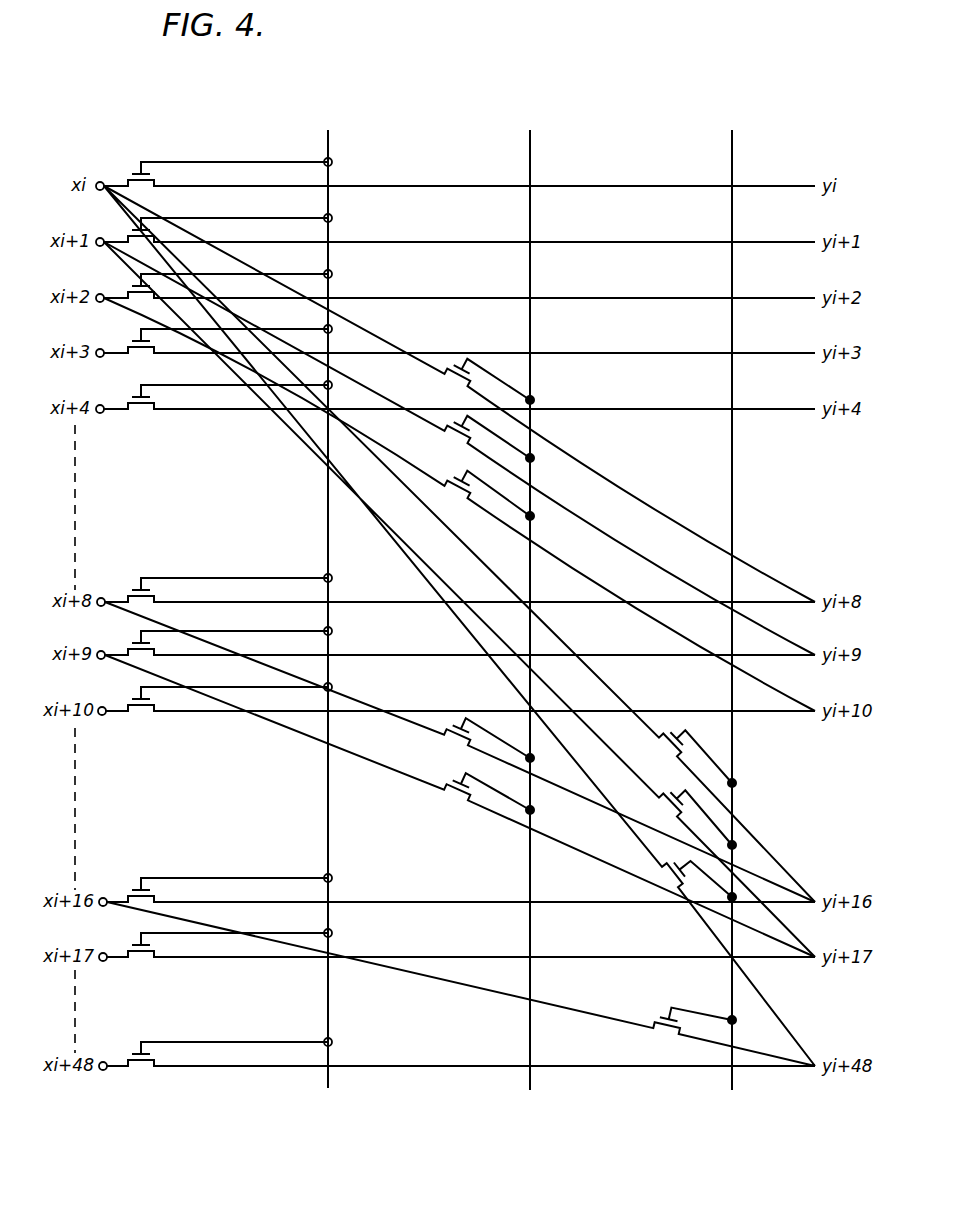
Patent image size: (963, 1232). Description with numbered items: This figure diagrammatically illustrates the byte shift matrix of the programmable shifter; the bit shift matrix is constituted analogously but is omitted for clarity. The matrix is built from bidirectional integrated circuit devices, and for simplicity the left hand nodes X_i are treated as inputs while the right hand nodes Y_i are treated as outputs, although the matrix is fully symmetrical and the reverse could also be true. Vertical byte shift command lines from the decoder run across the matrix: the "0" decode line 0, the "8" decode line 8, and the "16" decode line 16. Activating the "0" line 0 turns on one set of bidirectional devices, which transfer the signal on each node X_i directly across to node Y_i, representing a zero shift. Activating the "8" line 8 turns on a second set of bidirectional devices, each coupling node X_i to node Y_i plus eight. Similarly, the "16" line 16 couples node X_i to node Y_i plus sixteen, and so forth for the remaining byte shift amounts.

The "0" decode line 0 is at (328, 598).
The "8" decode line 8 is at (530, 599).
The "16" decode line 16 is at (731, 599).